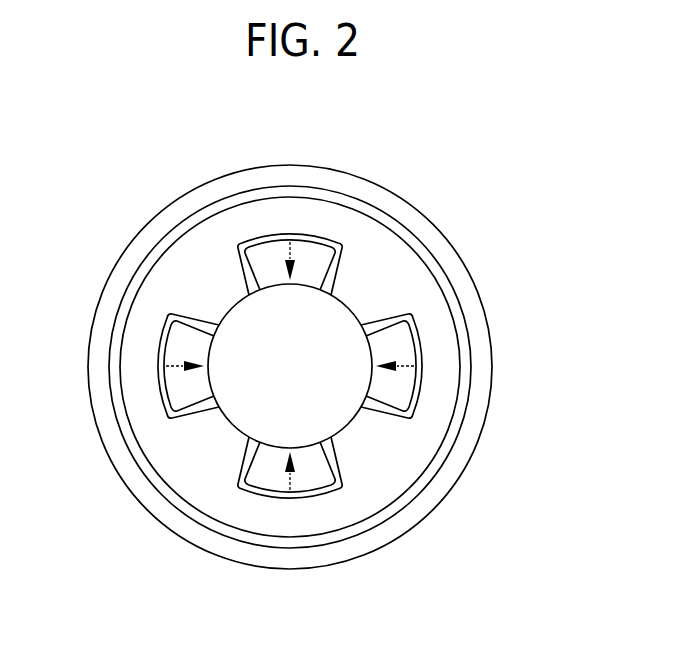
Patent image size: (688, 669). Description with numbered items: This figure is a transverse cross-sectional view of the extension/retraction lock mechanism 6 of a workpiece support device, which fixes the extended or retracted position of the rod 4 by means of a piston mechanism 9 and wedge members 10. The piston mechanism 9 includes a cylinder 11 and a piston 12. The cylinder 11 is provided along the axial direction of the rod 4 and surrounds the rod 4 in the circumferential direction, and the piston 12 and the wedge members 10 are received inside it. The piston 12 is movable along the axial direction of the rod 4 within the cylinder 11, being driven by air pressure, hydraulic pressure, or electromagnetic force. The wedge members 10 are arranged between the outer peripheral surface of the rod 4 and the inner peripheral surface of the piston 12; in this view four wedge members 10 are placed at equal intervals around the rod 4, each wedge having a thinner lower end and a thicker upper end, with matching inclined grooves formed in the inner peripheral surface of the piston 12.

The rod 4 is at (336, 326).
The extension/retraction lock mechanism 6 is at (490, 176).
The piston mechanism 9 is at (470, 320).
The wedge members 10 is at (312, 245).
The cylinder 11 is at (472, 442).
The piston 12 is at (393, 478).